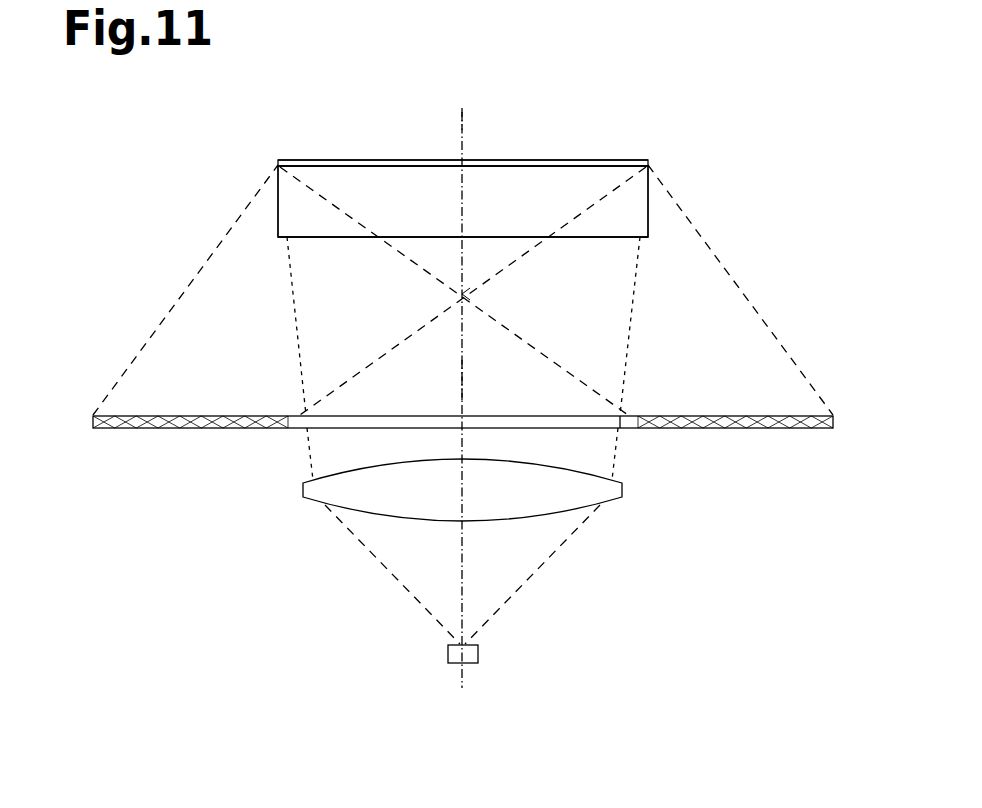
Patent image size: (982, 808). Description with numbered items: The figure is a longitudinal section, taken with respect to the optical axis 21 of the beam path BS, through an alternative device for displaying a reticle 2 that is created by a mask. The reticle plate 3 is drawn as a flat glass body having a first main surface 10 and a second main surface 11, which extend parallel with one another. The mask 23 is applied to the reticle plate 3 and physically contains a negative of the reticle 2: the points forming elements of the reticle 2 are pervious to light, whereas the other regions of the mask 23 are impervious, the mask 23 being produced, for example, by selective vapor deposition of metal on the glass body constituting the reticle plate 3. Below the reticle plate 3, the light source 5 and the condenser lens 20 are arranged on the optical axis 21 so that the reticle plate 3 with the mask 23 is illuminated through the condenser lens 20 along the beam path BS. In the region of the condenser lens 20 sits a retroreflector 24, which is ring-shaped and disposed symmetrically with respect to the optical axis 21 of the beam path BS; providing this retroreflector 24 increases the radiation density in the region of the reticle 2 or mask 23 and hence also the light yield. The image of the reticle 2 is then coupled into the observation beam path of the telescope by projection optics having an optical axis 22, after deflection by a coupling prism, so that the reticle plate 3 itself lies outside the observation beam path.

The reticle 2 is at (458, 157).
The optical axis of the projection optics 22 is at (464, 123).
The first main surface 10 is at (595, 158).
The mask 23 is at (272, 162).
The reticle plate 3 is at (272, 215).
The second main surface 11 is at (598, 238).
The beam path BS is at (633, 298).
The retroreflector 24 is at (158, 406).
The optical axis of the beam path 21 is at (466, 377).
The condenser lens 20 is at (297, 496).
The light source 5 is at (430, 651).